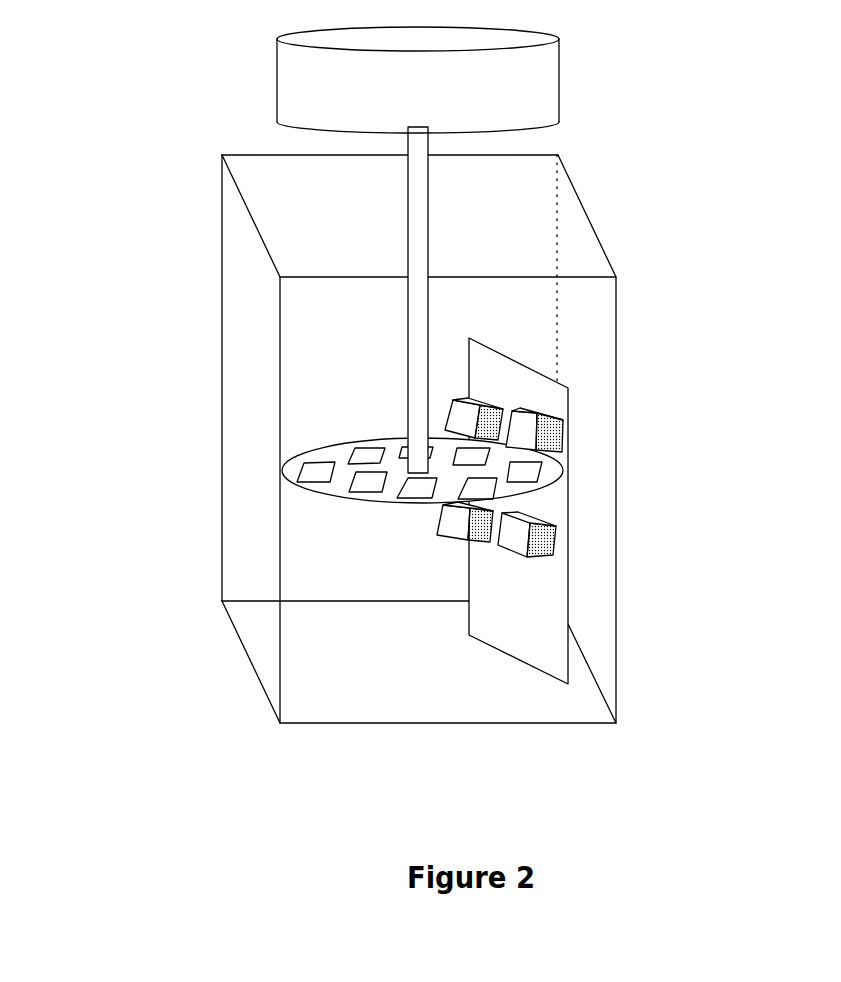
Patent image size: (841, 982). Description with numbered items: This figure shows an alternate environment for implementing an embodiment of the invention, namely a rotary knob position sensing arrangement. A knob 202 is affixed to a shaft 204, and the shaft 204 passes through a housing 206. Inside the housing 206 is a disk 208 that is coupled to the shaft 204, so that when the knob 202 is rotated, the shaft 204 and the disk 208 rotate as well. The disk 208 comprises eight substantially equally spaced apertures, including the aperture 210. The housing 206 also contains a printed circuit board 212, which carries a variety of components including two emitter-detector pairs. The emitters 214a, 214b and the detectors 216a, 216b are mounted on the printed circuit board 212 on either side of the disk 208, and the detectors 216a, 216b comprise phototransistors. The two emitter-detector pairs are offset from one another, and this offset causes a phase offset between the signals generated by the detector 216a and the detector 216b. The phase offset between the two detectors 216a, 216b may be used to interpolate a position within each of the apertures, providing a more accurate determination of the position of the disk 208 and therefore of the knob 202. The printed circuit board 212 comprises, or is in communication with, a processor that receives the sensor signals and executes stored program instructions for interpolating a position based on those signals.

The knob 202 is at (561, 85).
The shaft 204 is at (429, 230).
The housing 206 is at (617, 303).
The disk 208 is at (330, 446).
The aperture 210 is at (298, 470).
The printed circuit board 212 is at (516, 361).
The emitter 214a is at (481, 405).
The emitter 214b is at (566, 428).
The detector 216a is at (475, 508).
The detector 216b is at (556, 538).